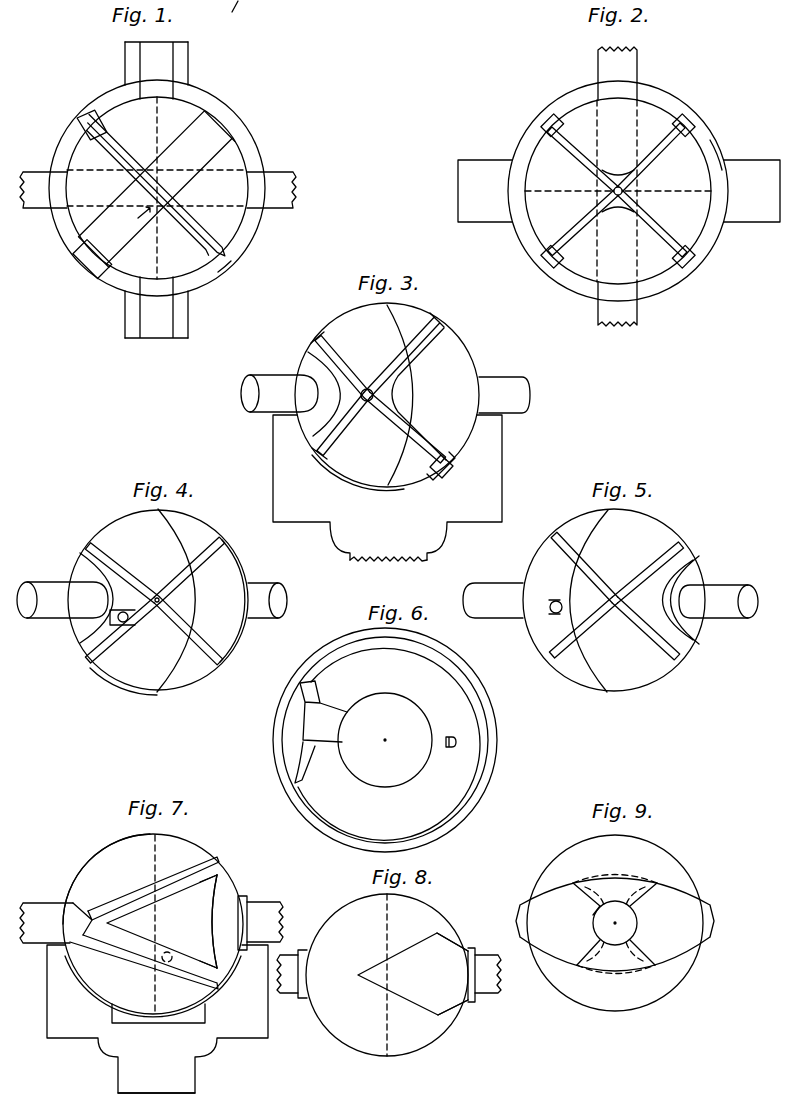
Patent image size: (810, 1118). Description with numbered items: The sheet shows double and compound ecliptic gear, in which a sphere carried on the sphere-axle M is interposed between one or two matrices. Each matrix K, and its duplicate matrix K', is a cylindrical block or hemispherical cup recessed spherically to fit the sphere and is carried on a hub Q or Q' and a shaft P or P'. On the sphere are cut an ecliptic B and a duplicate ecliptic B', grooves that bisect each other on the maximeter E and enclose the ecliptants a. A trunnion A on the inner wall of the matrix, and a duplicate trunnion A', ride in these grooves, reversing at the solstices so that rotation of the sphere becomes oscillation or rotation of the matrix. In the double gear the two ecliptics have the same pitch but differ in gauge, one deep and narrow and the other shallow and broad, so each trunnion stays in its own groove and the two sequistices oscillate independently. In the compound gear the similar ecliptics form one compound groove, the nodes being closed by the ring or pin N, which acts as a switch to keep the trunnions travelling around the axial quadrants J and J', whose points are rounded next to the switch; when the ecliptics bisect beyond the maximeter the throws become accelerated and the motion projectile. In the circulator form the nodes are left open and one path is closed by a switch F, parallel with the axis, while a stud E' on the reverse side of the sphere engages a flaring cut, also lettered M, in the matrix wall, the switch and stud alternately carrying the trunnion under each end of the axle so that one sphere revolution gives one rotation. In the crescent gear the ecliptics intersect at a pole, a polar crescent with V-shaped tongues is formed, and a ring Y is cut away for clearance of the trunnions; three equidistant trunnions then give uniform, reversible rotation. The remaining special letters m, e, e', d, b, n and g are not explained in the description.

In FIG. 1, the matrix shaft P is at (156, 70).
In FIG. 1, the matrix hub Q is at (156, 63).
In FIG. 2, the matrix hub Q is at (485, 191).
In FIG. 3, the matrix hub Q is at (388, 546).
In FIG. 7, the matrix hub Q is at (156, 1079).
In FIG. 1, the duplicate matrix shaft P' is at (156, 307).
In FIG. 1, the duplicate matrix hub Q' is at (156, 314).
In FIG. 2, the duplicate matrix hub Q' is at (752, 191).
In FIG. 1, the maximeter E is at (157, 188).
In FIG. 2, the maximeter E is at (618, 191).
In FIG. 3, the maximeter E is at (407, 395).
In FIG. 4, the maximeter E is at (183, 600).
In FIG. 5, the maximeter E is at (589, 601).
In FIG. 7, the maximeter E is at (162, 924).
In FIG. 8, the maximeter E is at (387, 975).
In FIG. 5, the stud E' is at (555, 597).
In FIG. 1, the ecliptic B is at (157, 189).
In FIG. 2, the ecliptic B is at (617, 192).
In FIG. 3, the ecliptic B is at (378, 386).
In FIG. 4, the ecliptic B is at (150, 600).
In FIG. 5, the ecliptic B is at (610, 591).
In FIG. 7, the ecliptic B is at (153, 888).
In FIG. 1, the duplicate ecliptic B' is at (156, 185).
In FIG. 2, the duplicate ecliptic B' is at (616, 189).
In FIG. 3, the duplicate ecliptic B' is at (369, 395).
In FIG. 4, the duplicate ecliptic B' is at (146, 599).
In FIG. 5, the duplicate ecliptic B' is at (618, 597).
In FIG. 7, the duplicate ecliptic B' is at (144, 962).
In FIG. 1, the trunnion A is at (92, 259).
In FIG. 2, the trunnion A is at (617, 191).
In FIG. 3, the trunnion A is at (441, 466).
In FIG. 6, the trunnion A is at (451, 730).
In FIG. 7, the trunnion A is at (173, 960).
In FIG. 1, the duplicate trunnion A' is at (92, 124).
In FIG. 1, the matrix K is at (157, 188).
In FIG. 2, the matrix K is at (618, 191).
In FIG. 3, the matrix K is at (387, 431).
In FIG. 4, the matrix K is at (158, 602).
In FIG. 5, the matrix K is at (614, 600).
In FIG. 6, the matrix K is at (385, 740).
In FIG. 7, the matrix K is at (157, 963).
In FIG. 1, the duplicate matrix K' is at (221, 269).
In FIG. 2, the duplicate matrix K' is at (715, 193).
In FIG. 1, the port pipe m is at (158, 190).
In FIG. 2, the port pipe m is at (617, 186).
In FIG. 3, the port pipe m is at (385, 394).
In FIG. 4, the port pipe m is at (152, 600).
In FIG. 5, the port pipe m is at (610, 600).
In FIG. 7, the port pipe m is at (151, 922).
In FIG. 8, the port pipe m is at (389, 974).
In FIG. 9, the port pipe m is at (615, 923).
In FIG. 2, the axial quadrant J is at (618, 207).
In FIG. 3, the axial quadrant J is at (324, 394).
In FIG. 4, the axial quadrant J is at (96, 598).
In FIG. 5, the axial quadrant J is at (681, 600).
In FIG. 3, the axial quadrant J' is at (425, 394).
In FIG. 4, the axial quadrant J' is at (232, 601).
In FIG. 2, the ring on axle N is at (615, 184).
In FIG. 3, the ring on axle N is at (373, 393).
In FIG. 4, the ring on axle N is at (157, 599).
In FIG. 4, the switch F is at (122, 609).
In FIG. 6, the sphere-axle M is at (321, 732).
In FIG. 7, the ecliptant a is at (106, 909).
In FIG. 7, the piston e is at (162, 921).
In FIG. 8, the piston e is at (413, 974).
In FIG. 9, the piston e is at (615, 924).
In FIG. 7, the piston edge e' is at (207, 921).
In FIG. 8, the piston edge e' is at (449, 974).
In FIG. 9, the piston edge e' is at (616, 923).
In FIG. 7, the piston head d is at (82, 919).
In FIG. 7, the piston back b is at (218, 921).
In FIG. 8, the piston back b is at (459, 975).
In FIG. 9, the piston back b is at (590, 918).
In FIG. 7, the ring Y is at (221, 921).
In FIG. 7, the neck n is at (243, 923).
In FIG. 8, the neck n is at (386, 975).
In FIG. 9, the guide g is at (615, 922).